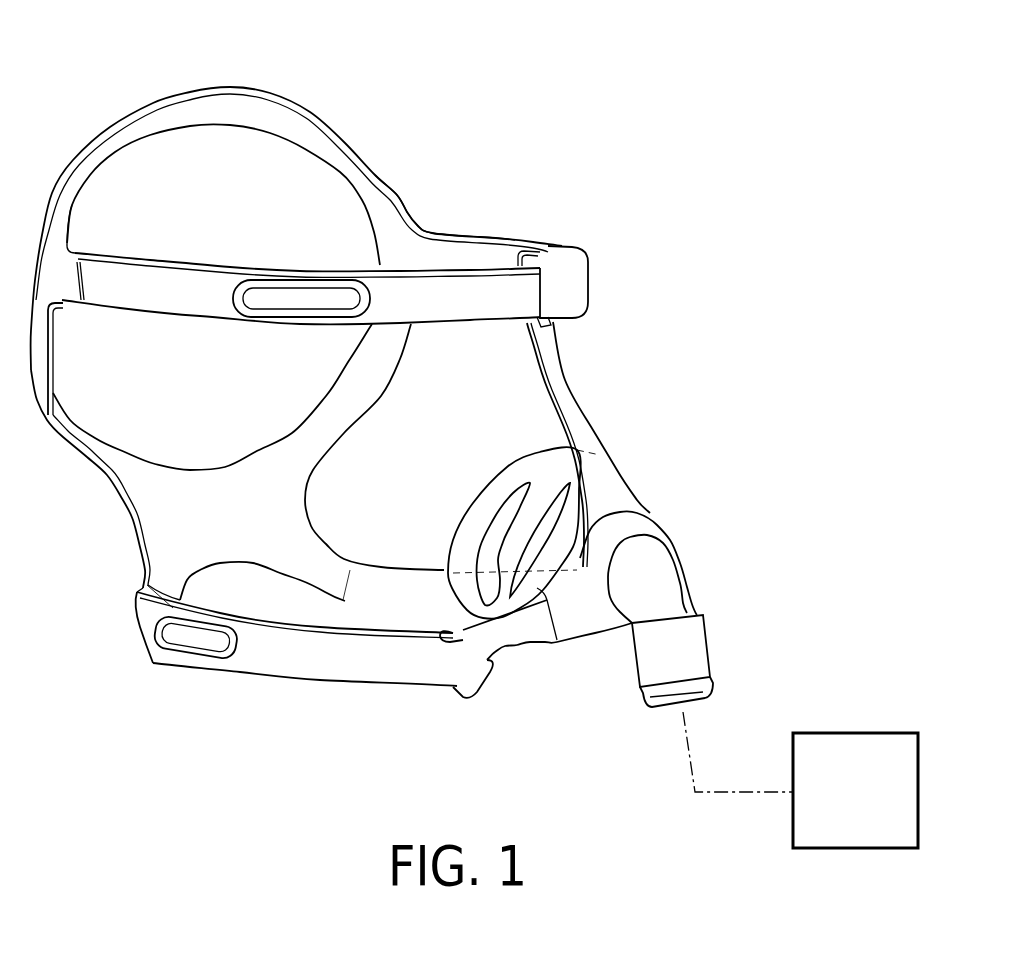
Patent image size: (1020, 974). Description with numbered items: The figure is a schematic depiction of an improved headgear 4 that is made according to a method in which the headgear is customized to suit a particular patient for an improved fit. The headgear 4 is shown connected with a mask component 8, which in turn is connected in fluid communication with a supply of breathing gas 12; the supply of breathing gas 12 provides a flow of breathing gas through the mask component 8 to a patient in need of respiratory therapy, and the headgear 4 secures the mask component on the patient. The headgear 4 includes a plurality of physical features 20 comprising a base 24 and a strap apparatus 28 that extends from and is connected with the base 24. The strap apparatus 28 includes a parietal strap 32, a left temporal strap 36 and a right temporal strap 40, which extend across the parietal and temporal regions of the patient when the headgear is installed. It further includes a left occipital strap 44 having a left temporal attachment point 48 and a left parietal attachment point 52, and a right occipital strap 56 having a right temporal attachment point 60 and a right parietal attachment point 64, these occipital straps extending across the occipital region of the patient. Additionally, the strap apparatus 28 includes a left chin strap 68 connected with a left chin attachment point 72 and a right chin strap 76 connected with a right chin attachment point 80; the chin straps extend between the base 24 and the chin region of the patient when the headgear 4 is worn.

The headgear 4 is at (508, 139).
The mask component 8 is at (587, 433).
The supply of breathing gas 12 is at (862, 733).
The physical features 20 is at (335, 147).
The base 24 is at (204, 455).
The strap apparatus 28 is at (290, 83).
The parietal strap 32 is at (140, 104).
The left temporal strap 36 is at (497, 240).
The right temporal strap 40 is at (163, 264).
The left occipital strap 44 is at (397, 367).
The left temporal attachment point 48 is at (430, 233).
The left parietal attachment point 52 is at (398, 194).
The right occipital strap 56 is at (50, 420).
The right temporal attachment point 60 is at (83, 300).
The right parietal attachment point 64 is at (70, 223).
The left chin strap 68 is at (390, 568).
The left chin attachment point 72 is at (327, 553).
The right chin strap 76 is at (357, 680).
The right chin attachment point 80 is at (147, 578).